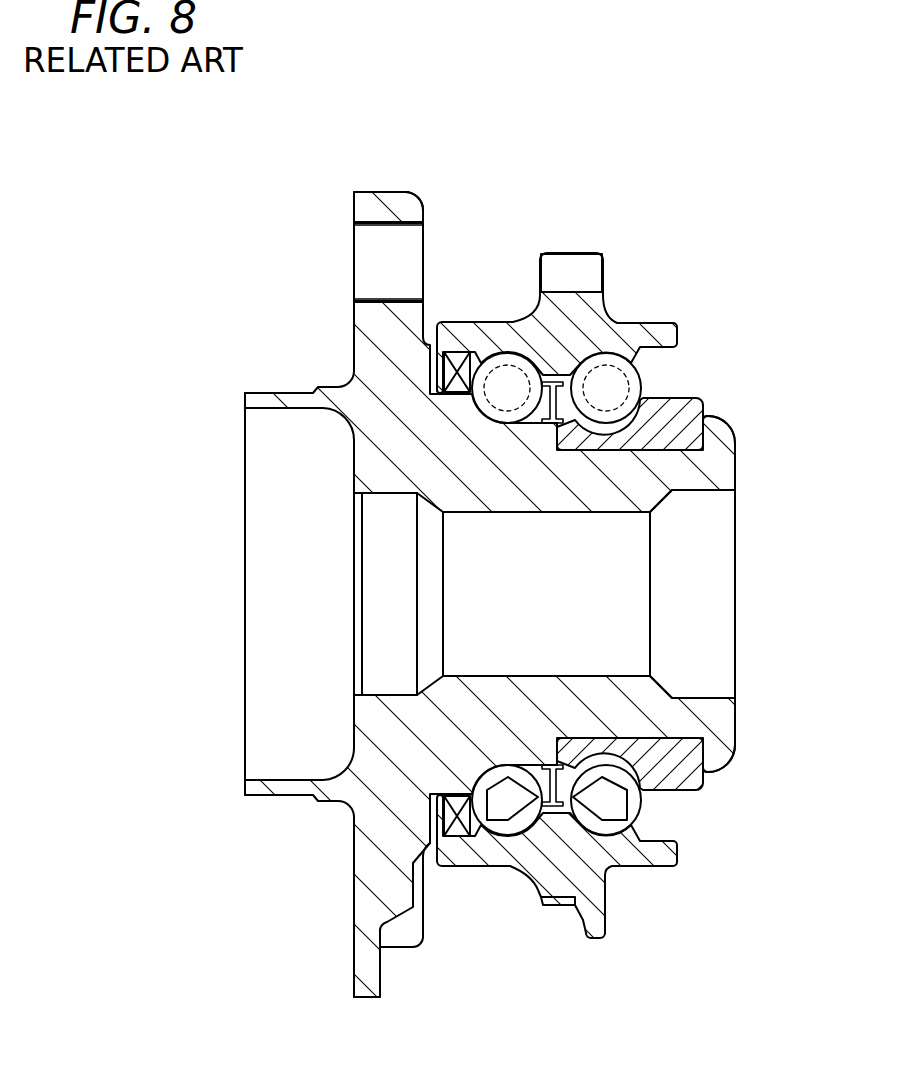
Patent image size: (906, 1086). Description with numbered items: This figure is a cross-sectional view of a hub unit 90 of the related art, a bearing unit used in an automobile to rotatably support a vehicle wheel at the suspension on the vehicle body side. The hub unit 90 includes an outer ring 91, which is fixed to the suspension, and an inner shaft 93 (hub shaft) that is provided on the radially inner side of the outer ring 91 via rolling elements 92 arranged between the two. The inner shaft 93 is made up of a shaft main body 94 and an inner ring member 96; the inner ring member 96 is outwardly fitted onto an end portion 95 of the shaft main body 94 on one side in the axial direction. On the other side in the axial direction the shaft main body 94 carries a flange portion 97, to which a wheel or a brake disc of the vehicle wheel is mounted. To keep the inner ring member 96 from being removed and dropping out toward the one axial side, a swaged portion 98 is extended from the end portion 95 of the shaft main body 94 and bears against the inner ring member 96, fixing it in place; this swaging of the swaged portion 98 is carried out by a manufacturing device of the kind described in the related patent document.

The hub unit 90 is at (594, 563).
The outer ring 91 is at (566, 305).
The rolling elements 92 is at (504, 385).
The inner shaft 93 is at (440, 551).
The shaft main body 94 is at (497, 712).
The end portion 95 is at (670, 720).
The inner ring member 96 is at (688, 792).
The flange portion 97 is at (389, 192).
The swaged portion 98 is at (713, 757).